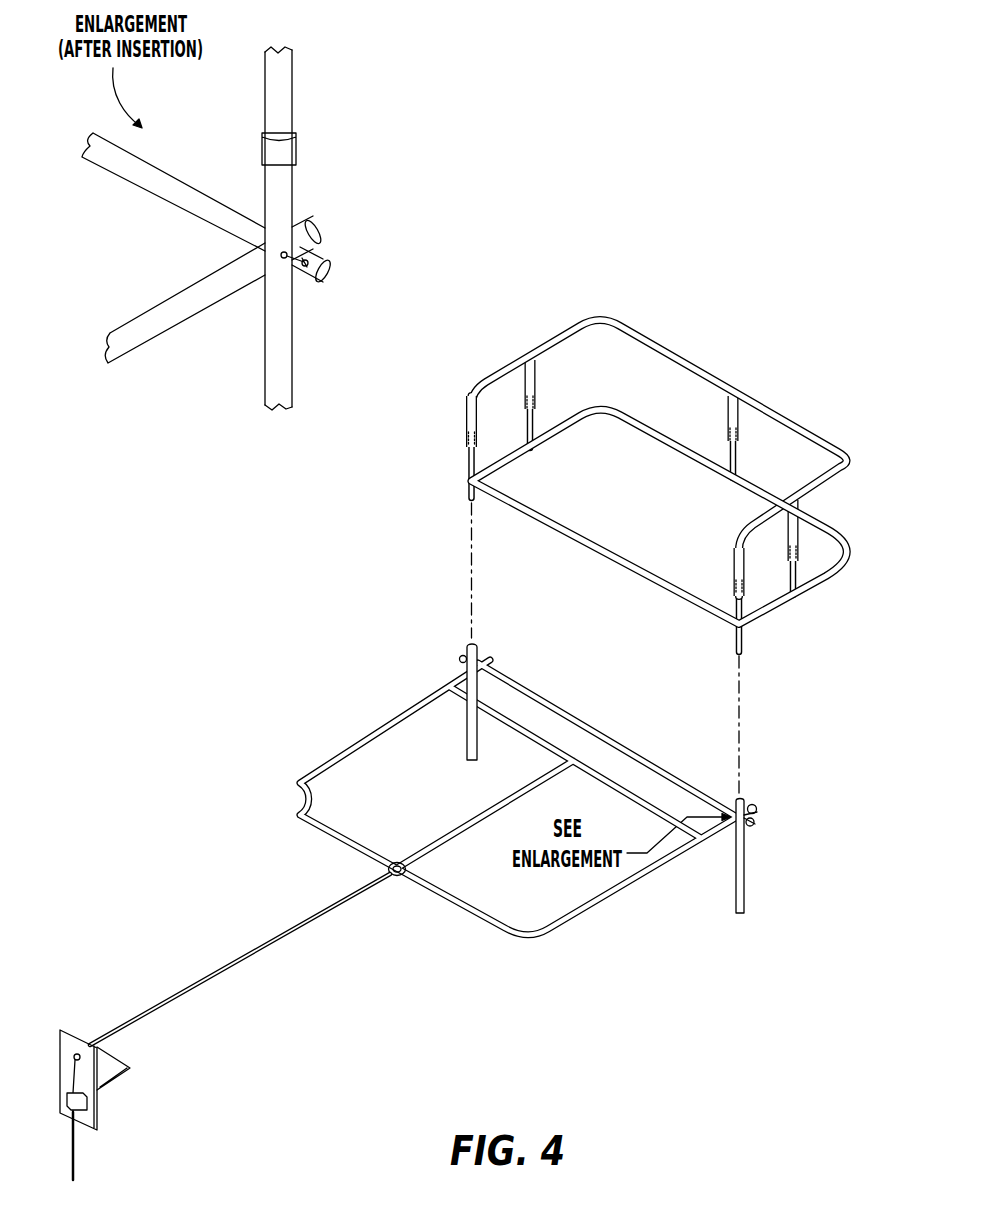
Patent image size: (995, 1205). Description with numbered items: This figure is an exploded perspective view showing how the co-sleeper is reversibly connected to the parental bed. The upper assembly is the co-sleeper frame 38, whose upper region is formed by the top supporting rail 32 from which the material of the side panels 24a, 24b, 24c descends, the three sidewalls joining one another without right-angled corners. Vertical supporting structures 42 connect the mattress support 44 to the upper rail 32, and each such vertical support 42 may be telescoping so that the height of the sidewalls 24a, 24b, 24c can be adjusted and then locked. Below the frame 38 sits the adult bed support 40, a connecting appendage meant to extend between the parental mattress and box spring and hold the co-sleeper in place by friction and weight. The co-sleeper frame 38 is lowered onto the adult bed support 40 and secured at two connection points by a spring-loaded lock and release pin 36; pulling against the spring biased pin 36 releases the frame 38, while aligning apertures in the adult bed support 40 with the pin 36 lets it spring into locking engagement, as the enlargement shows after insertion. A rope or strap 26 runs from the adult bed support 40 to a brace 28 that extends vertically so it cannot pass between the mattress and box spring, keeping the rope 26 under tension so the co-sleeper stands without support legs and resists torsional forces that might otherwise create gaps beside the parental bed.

The side panel 24a is at (490, 417).
The side panel 24b is at (707, 397).
The side panel 24c is at (766, 582).
The rope or strap 26 is at (213, 977).
The brace 28 is at (98, 1107).
The top supporting rail 32 is at (662, 327).
The spring-loaded lock and release pin 36 is at (748, 800).
The co-sleeper frame 38 is at (532, 376).
The adult bed support 40 is at (426, 928).
The vertical supporting structure 42 is at (800, 540).
The mattress support 44 is at (827, 573).